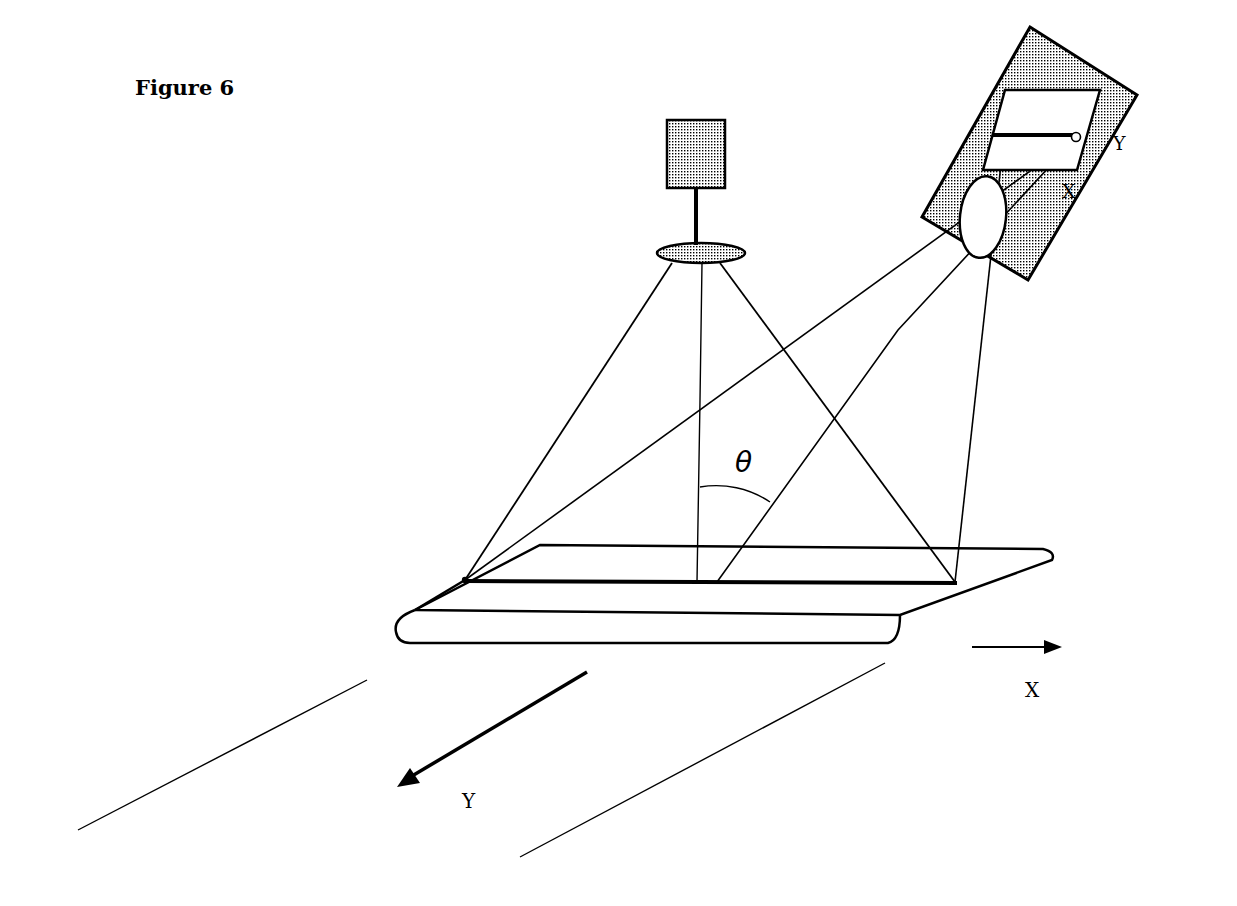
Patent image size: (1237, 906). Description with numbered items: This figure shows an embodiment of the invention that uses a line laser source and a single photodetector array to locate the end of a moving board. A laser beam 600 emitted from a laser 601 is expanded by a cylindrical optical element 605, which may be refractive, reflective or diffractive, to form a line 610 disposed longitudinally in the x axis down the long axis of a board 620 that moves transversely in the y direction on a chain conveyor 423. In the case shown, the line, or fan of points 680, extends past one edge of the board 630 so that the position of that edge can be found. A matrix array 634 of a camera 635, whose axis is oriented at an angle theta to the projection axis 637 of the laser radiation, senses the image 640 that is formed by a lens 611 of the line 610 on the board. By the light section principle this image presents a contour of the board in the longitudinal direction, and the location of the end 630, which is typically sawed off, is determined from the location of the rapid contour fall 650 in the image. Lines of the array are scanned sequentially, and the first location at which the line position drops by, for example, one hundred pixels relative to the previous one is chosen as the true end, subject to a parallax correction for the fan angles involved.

The laser 601 is at (680, 120).
The laser beam 600 is at (700, 212).
The cylindrical optical element 605 is at (745, 250).
The fan of points 680 is at (652, 314).
The projection axis 637 is at (710, 348).
The matrix array 634 is at (990, 102).
The camera 635 is at (1060, 45).
The image 640 is at (1000, 190).
The rapid contour fall 650 is at (1085, 134).
The lens 611 is at (1008, 245).
The board 620 is at (1000, 545).
The edge of the board 630 is at (462, 580).
The line 610 is at (711, 576).
The chain conveyor 423 is at (481, 760).